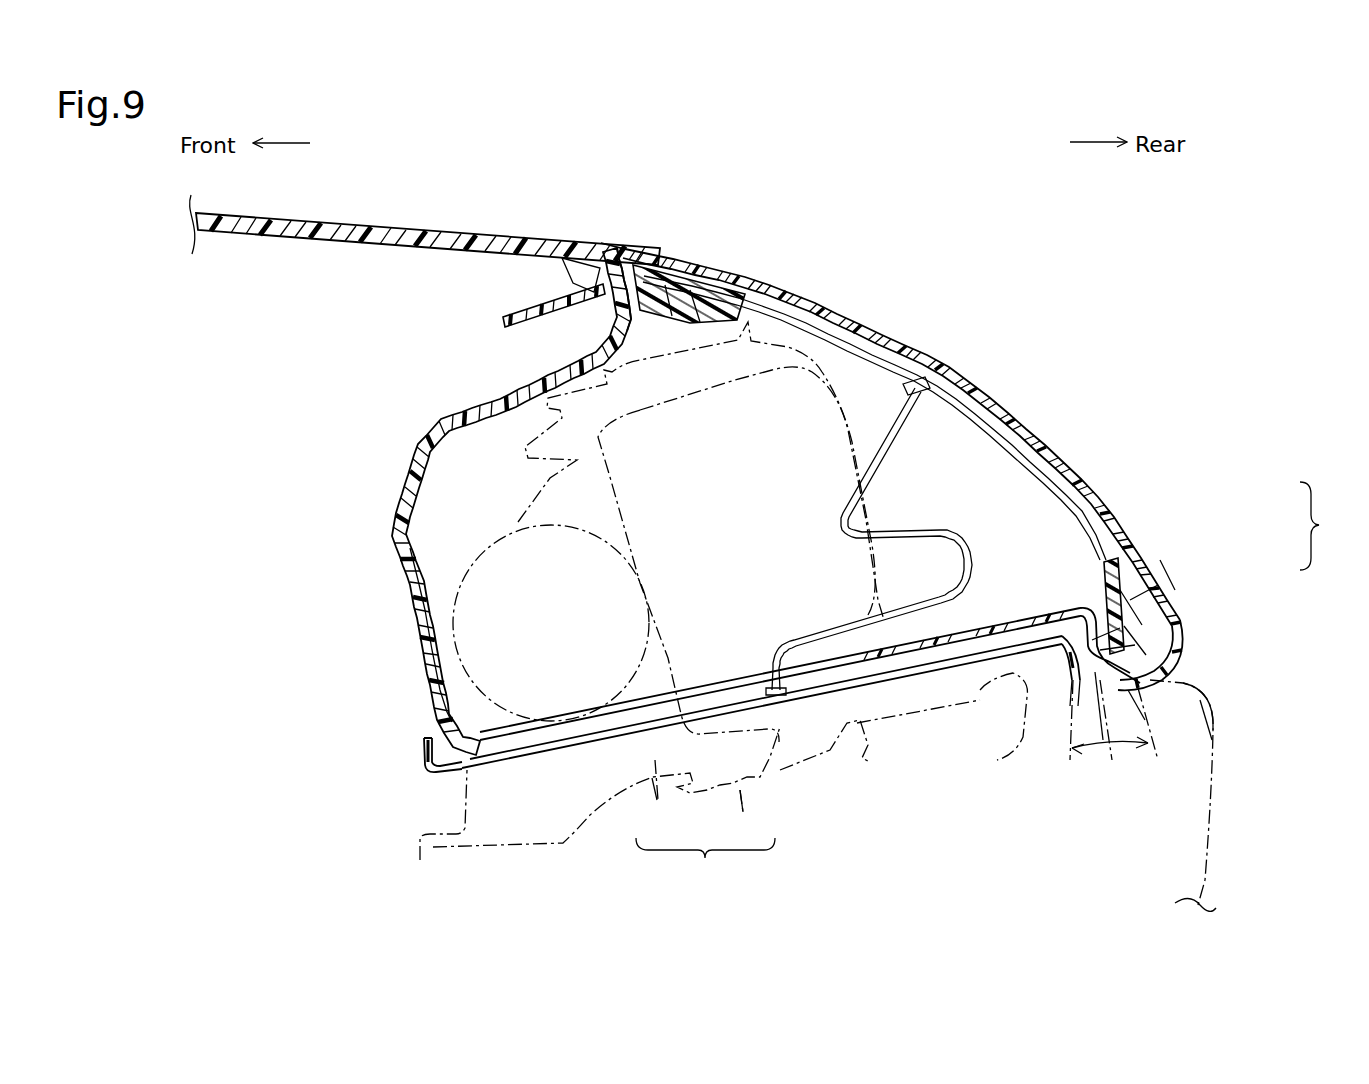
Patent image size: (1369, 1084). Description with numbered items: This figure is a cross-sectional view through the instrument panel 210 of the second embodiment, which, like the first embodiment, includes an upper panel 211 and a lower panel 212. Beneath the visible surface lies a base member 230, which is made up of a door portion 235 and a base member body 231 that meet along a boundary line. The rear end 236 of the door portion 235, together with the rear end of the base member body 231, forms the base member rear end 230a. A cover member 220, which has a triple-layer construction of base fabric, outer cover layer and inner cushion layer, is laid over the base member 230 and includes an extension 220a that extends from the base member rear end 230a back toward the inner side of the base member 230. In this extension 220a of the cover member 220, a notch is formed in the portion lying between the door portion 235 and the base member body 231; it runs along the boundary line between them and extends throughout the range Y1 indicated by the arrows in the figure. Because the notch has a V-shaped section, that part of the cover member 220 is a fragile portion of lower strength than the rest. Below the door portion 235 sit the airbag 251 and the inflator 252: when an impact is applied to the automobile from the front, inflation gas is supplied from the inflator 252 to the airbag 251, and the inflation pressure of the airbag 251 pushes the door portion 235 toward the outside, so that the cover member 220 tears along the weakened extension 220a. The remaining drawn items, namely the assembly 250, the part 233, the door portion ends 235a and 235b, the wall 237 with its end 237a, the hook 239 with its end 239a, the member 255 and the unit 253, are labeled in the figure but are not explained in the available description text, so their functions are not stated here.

The vehicle roof side structure 250 is at (948, 163).
The base member body 231 is at (355, 250).
The cover member 220 is at (913, 348).
The joint portion 233 is at (606, 252).
The door portion 235 is at (970, 417).
The base member 230 is at (749, 501).
The garnish upper end 235a is at (738, 305).
The garnish lower end 235b is at (1085, 557).
The side wall portion 237 is at (413, 659).
The hook portion 239 is at (423, 771).
The wire 255 is at (972, 556).
The instrument panel 210 is at (1257, 611).
The upper panel 211 is at (1157, 549).
The lower panel 212 is at (1216, 698).
The seat assembly 253 is at (705, 831).
The inflator 252 is at (657, 800).
The airbag 251 is at (742, 790).
The hook end portion 239a is at (1080, 698).
The extension 220a is at (1105, 740).
The side wall end portion 237a is at (1157, 707).
The range Y1 is at (1110, 759).
The rear end 236 is at (1214, 750).
The base member rear end 230a is at (1261, 727).